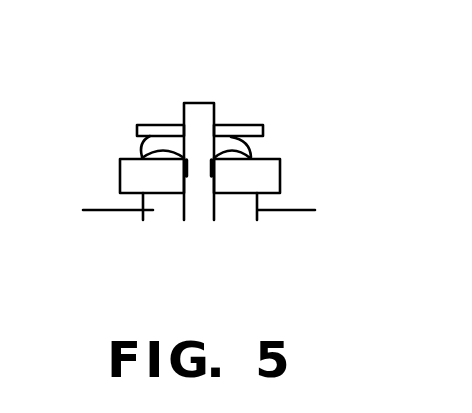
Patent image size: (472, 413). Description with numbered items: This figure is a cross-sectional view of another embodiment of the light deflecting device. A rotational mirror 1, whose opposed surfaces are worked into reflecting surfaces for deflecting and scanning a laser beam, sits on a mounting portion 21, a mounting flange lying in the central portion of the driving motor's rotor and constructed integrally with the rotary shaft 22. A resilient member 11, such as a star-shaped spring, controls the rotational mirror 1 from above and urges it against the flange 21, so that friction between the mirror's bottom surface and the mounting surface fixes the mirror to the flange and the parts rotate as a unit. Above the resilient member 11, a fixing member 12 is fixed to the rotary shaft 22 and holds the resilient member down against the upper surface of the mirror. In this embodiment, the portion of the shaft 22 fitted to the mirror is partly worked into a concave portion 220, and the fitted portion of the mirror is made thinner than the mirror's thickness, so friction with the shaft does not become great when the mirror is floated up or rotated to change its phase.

The rotational mirror 1 is at (282, 173).
The resilient member 11 is at (152, 150).
The fixing member 12 is at (161, 125).
The mounting portion 21 is at (153, 202).
The rotary shaft 22 is at (204, 103).
The concave portion 220 is at (211, 160).